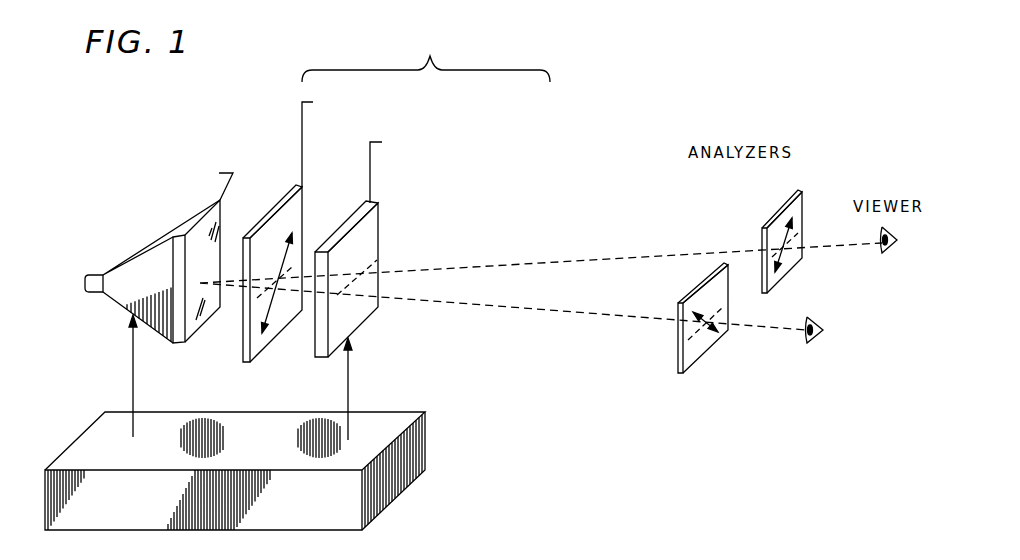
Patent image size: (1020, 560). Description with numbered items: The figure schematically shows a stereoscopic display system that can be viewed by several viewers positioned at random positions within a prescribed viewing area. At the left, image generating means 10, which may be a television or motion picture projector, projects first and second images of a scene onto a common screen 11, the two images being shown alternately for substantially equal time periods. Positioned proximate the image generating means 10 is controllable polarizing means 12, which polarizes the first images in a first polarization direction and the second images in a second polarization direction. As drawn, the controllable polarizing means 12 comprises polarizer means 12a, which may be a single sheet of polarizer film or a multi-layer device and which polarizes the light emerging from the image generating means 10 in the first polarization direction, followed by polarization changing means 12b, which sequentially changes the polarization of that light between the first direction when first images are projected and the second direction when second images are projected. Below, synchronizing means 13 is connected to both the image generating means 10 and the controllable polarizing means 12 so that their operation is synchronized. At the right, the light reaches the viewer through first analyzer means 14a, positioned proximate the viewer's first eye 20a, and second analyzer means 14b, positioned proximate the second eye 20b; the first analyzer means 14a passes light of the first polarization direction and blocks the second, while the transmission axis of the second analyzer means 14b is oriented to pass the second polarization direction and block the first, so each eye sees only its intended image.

The image generating means 10 is at (120, 290).
The common screen 11 is at (180, 345).
The controllable polarizing means 12 is at (542, 66).
The polarizer means 12a is at (263, 350).
The polarization changing means 12b is at (367, 318).
The synchronizing means 13 is at (400, 493).
The first analyzer means 14a is at (775, 212).
The second analyzer means 14b is at (705, 357).
The first eye 20a is at (890, 256).
The second eye 20b is at (821, 320).